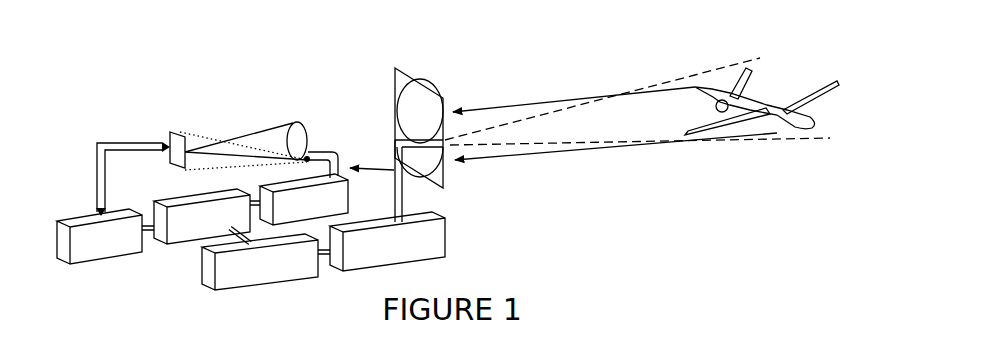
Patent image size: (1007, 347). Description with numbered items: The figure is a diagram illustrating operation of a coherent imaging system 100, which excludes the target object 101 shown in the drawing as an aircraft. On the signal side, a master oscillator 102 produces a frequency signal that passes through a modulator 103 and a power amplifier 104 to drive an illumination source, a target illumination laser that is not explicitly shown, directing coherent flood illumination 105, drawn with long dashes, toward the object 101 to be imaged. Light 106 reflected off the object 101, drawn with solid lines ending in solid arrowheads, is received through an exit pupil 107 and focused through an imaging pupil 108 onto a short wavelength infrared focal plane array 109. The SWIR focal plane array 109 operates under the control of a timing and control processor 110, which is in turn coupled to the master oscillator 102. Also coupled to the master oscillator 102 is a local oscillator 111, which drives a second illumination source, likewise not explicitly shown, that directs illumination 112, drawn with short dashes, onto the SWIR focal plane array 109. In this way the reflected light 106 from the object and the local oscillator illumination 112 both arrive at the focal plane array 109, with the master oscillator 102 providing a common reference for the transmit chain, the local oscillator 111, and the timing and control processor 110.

The coherent imaging system 100 is at (707, 210).
The target object 101 is at (783, 77).
The master oscillator 102 is at (202, 216).
The modulator 103 is at (260, 262).
The power amplifier 104 is at (387, 241).
The coherent flood illumination 105 is at (677, 78).
The light 106 is at (478, 107).
The exit pupil 107 is at (419, 83).
The imaging pupil 108 is at (392, 90).
The SWIR focal plane array 109 is at (170, 133).
The timing and control processor 110 is at (99, 236).
The local oscillator 111 is at (304, 188).
The illumination 112 is at (200, 135).